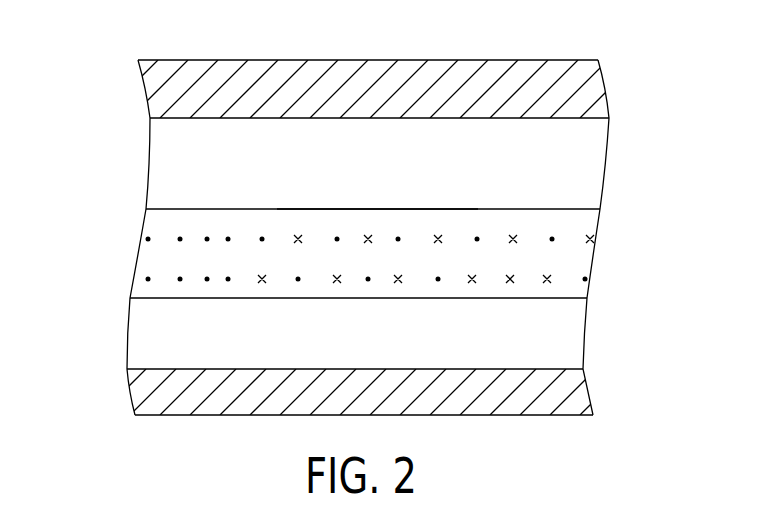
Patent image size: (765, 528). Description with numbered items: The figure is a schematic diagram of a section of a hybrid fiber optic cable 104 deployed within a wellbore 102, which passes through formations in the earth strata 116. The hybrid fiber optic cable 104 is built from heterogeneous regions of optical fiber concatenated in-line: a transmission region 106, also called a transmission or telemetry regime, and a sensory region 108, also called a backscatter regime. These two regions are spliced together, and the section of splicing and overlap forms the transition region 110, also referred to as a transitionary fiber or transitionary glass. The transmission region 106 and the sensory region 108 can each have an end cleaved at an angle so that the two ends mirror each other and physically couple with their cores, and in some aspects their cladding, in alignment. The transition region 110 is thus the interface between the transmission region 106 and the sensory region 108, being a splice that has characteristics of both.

The wellbore 102 is at (618, 120).
The hybrid fiber optic cable 104 is at (113, 212).
The transmission region 106 is at (195, 287).
The sensory region 108 is at (525, 223).
The transition region 110 is at (482, 205).
The earth strata 116 is at (487, 75).